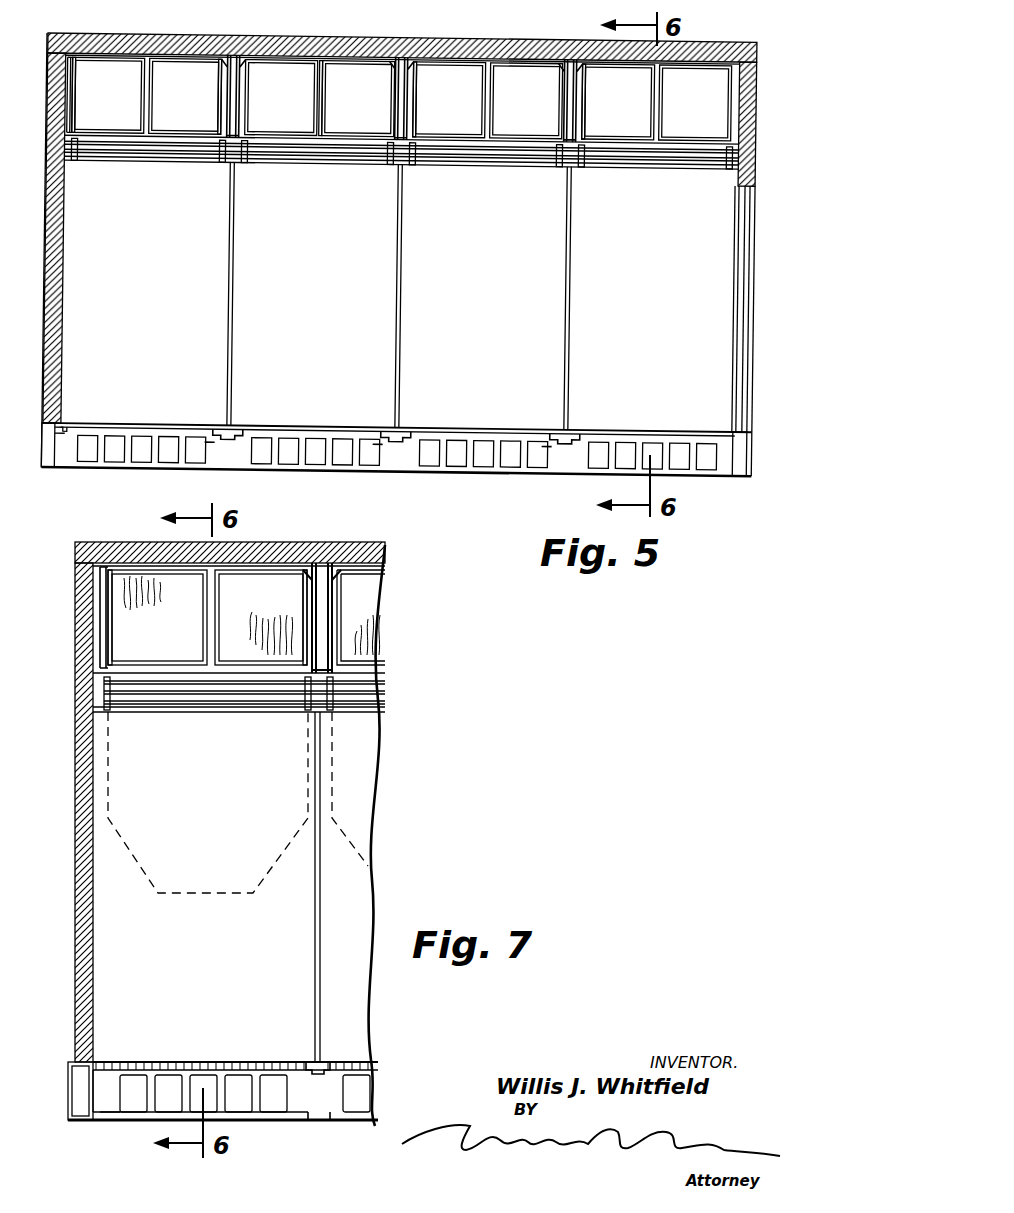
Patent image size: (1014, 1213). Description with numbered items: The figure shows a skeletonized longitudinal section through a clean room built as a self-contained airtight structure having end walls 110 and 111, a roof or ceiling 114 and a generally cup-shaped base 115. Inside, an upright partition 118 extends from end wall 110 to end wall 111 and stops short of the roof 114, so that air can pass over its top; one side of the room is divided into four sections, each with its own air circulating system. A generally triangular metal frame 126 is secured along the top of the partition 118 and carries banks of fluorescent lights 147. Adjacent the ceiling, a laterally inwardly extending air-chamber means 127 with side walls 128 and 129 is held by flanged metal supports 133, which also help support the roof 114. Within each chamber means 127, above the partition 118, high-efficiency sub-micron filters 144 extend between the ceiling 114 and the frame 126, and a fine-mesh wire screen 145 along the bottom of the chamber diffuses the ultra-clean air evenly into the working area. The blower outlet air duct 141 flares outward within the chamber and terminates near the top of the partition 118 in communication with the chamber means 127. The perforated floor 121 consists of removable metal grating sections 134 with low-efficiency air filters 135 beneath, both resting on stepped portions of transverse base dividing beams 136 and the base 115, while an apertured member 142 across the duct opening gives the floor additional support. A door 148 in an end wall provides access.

In FIG. 5, the end wall 110 is at (740, 174).
In FIG. 5, the end wall 111 is at (62, 298).
In FIG. 7, the end wall 111 is at (75, 882).
In FIG. 5, the roof or ceiling 114 is at (145, 38).
In FIG. 7, the roof or ceiling 114 is at (340, 545).
In FIG. 7, the base 115 is at (68, 1095).
In FIG. 5, the partition 118 is at (348, 280).
In FIG. 7, the partition 118 is at (233, 937).
In FIG. 5, the perforated floor 121 is at (353, 426).
In FIG. 7, the perforated floor 121 is at (137, 1058).
In FIG. 5, the triangular metal frame 126 is at (130, 160).
In FIG. 7, the triangular metal frame 126 is at (163, 712).
In FIG. 5, the air-chamber means 127 is at (84, 80).
In FIG. 7, the air-chamber means 127 is at (118, 646).
In FIG. 5, the side wall of chamber means 128 is at (76, 110).
In FIG. 7, the side wall of chamber means 128 is at (100, 622).
In FIG. 5, the side wall of chamber means 129 is at (226, 114).
In FIG. 7, the side wall of chamber means 129 is at (308, 599).
In FIG. 5, the flanged metal support 133 is at (240, 84).
In FIG. 7, the flanged metal support 133 is at (332, 597).
In FIG. 7, the metal grating section 134 is at (215, 1067).
In FIG. 5, the low-efficiency air filter 135 is at (135, 467).
In FIG. 7, the low-efficiency air filter 135 is at (282, 1070).
In FIG. 5, the base dividing beam 136 is at (236, 438).
In FIG. 7, the base dividing beam 136 is at (320, 1100).
In FIG. 7, the blower outlet air duct 141 is at (130, 850).
In FIG. 5, the apertured member 142 is at (73, 440).
In FIG. 7, the apertured member 142 is at (115, 1108).
In FIG. 5, the high-efficiency sub-micron filter 144 is at (710, 109).
In FIG. 7, the high-efficiency sub-micron filter 144 is at (380, 614).
In FIG. 7, the fine-mesh wire screen 145 is at (292, 682).
In FIG. 5, the fluorescent lights 147 is at (200, 152).
In FIG. 7, the fluorescent lights 147 is at (228, 696).
In FIG. 5, the door 148 is at (740, 260).